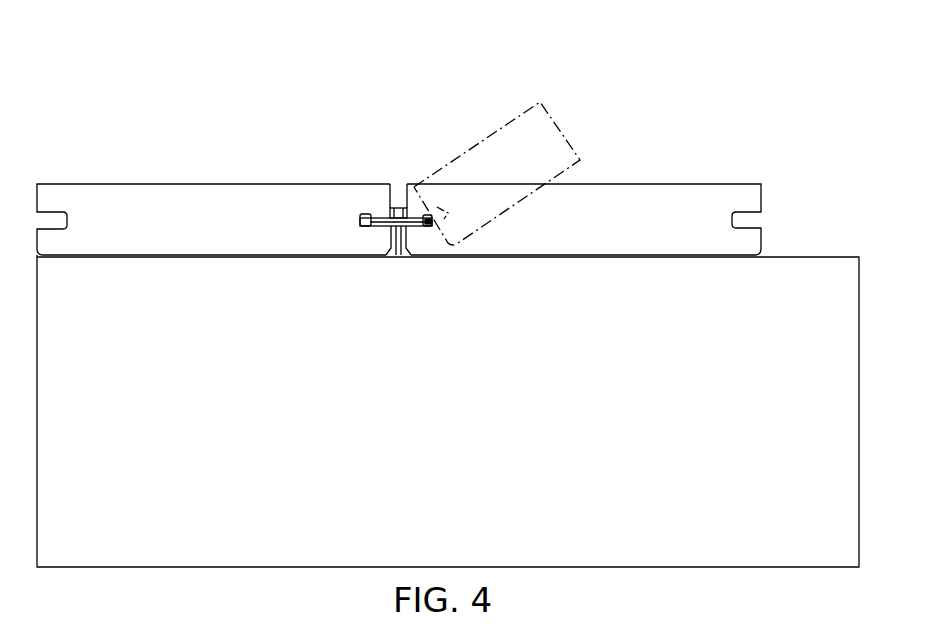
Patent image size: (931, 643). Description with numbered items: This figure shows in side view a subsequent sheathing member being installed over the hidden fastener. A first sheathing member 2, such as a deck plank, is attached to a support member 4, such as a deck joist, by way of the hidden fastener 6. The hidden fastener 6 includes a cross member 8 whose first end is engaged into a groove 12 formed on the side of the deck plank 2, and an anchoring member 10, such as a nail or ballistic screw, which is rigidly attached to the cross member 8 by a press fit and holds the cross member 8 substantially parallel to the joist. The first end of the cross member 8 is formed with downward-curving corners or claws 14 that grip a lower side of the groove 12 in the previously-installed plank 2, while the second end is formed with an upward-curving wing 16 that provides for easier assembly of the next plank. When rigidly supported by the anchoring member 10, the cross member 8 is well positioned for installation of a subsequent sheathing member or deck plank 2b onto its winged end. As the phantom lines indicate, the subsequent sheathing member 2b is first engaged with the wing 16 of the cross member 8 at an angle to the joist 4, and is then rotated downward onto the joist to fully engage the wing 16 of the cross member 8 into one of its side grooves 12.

The sheathing member 2 is at (223, 232).
The subsequent sheathing member 2b is at (604, 226).
The support member 4 is at (456, 425).
The hidden fastener 6 is at (409, 182).
The cross member 8 is at (418, 187).
The anchoring member 10 is at (398, 208).
The groove 12 is at (363, 214).
The claws 14 is at (365, 226).
The wing 16 is at (428, 226).